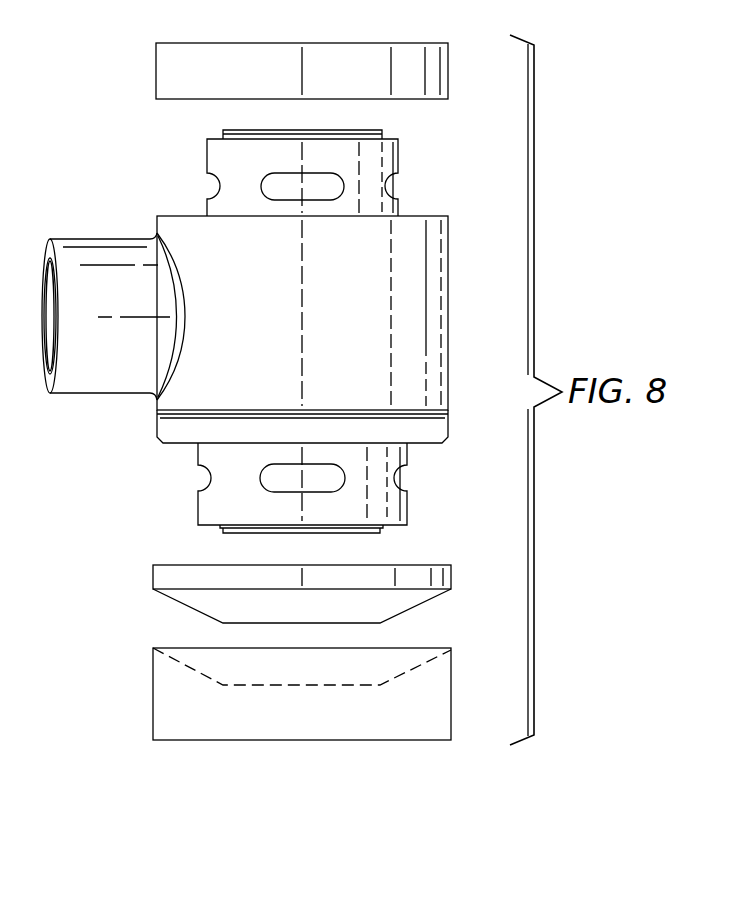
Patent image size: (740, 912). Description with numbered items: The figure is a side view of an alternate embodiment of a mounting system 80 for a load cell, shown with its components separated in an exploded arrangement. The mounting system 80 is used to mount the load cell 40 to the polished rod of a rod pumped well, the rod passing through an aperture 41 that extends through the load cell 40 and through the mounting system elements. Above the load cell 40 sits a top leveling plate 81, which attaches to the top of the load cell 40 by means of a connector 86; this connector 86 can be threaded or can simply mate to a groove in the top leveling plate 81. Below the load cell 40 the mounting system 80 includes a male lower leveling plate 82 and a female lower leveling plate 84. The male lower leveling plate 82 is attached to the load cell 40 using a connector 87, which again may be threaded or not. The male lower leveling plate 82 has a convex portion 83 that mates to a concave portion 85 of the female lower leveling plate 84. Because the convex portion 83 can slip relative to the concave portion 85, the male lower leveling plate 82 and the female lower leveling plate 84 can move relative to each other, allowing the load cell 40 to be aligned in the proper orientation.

The mounting system 80 is at (103, 50).
The aperture 41 is at (352, 32).
The top leveling plate 81 is at (177, 101).
The connector 86 is at (359, 129).
The load cell 40 is at (245, 331).
The connector 87 is at (240, 534).
The male lower leveling plate 82 is at (153, 575).
The convex portion 83 is at (182, 608).
The female lower leveling plate 84 is at (272, 679).
The concave portion 85 is at (380, 663).